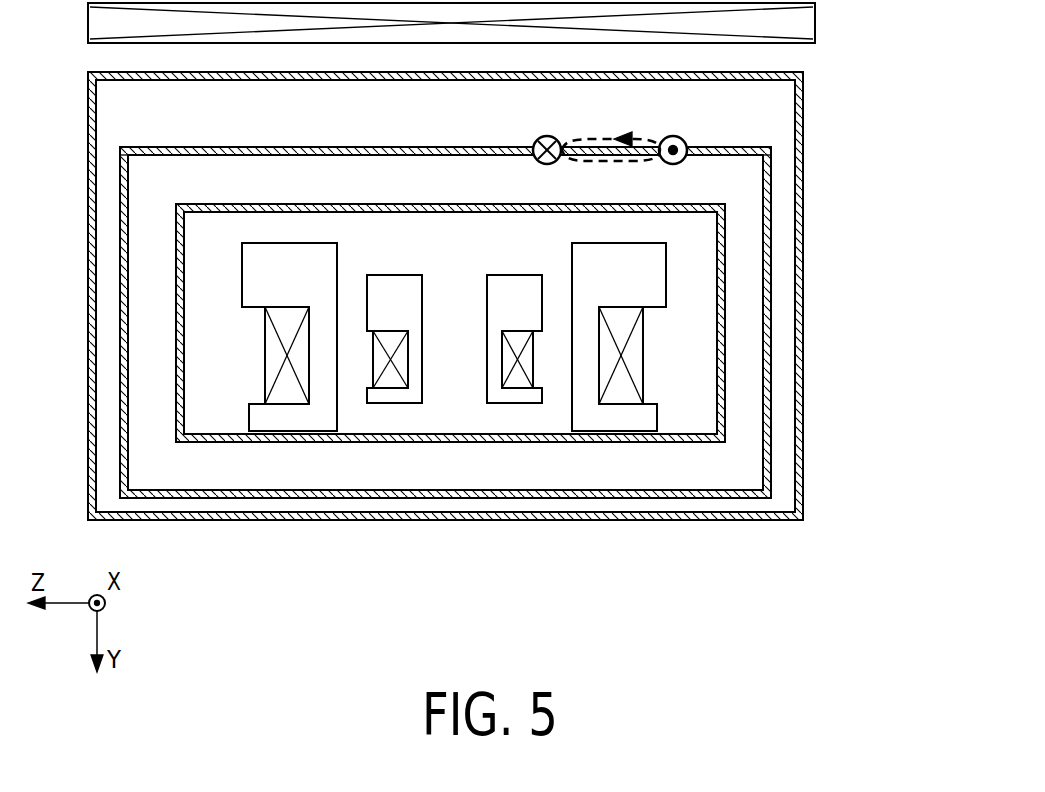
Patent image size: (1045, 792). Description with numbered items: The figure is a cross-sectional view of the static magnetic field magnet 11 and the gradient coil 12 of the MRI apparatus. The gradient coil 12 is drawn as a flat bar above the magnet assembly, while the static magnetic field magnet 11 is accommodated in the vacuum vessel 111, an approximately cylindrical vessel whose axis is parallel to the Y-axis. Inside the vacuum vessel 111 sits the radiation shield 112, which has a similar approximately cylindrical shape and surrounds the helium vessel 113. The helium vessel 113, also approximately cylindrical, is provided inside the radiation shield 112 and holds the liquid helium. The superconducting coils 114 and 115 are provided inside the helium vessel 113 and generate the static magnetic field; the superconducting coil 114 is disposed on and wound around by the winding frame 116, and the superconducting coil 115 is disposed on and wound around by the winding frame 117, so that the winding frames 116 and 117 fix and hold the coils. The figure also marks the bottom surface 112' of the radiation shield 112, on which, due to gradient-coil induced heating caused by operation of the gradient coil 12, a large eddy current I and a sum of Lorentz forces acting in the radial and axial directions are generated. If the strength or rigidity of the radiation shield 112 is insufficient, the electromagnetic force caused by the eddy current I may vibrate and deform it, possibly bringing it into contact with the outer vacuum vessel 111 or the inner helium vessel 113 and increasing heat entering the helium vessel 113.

The gradient coil 12 is at (815, 25).
The static magnetic field magnet 11 is at (521, 296).
The vacuum vessel 111 is at (803, 196).
The radiation shield 112 is at (509, 322).
The bottom surface of the radiation shield 112' is at (445, 119).
The helium vessel 113 is at (725, 258).
The superconducting coil 114 is at (643, 331).
The superconducting coil 115 is at (533, 359).
The winding frame 116 is at (657, 415).
The winding frame 117 is at (542, 395).
The eddy current I is at (588, 137).